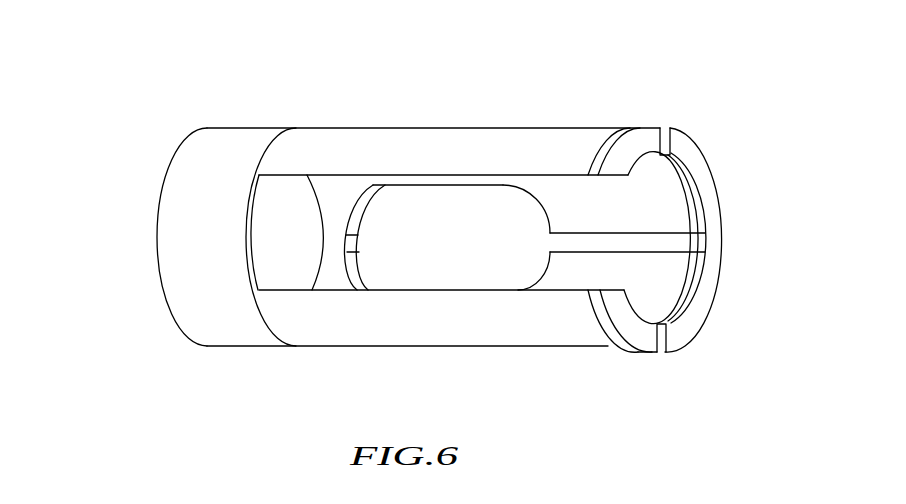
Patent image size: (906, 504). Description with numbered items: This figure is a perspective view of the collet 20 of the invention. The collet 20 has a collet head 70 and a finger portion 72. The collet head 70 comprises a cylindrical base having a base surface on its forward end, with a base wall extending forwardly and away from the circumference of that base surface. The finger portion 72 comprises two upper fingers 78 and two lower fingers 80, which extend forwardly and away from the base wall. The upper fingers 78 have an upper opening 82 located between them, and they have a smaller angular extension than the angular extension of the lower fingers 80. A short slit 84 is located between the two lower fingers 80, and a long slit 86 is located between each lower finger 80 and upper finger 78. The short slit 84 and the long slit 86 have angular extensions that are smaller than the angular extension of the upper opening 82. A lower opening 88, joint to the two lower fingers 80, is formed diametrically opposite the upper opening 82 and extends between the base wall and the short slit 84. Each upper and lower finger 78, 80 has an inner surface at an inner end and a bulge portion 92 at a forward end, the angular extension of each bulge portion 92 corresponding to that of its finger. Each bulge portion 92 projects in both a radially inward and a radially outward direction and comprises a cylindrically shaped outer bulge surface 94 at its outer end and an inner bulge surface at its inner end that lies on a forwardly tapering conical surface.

The collet 20 is at (109, 125).
The collet head 70 is at (223, 116).
The finger portion 72 is at (460, 118).
The upper fingers 78 is at (517, 153).
The lower fingers 80 is at (653, 179).
The upper opening 82 is at (341, 268).
The short slit 84 is at (719, 244).
The long slit 86 is at (672, 136).
The lower opening 88 is at (437, 222).
The bulge portion 92 is at (637, 152).
The outer bulge surface 94 is at (611, 317).